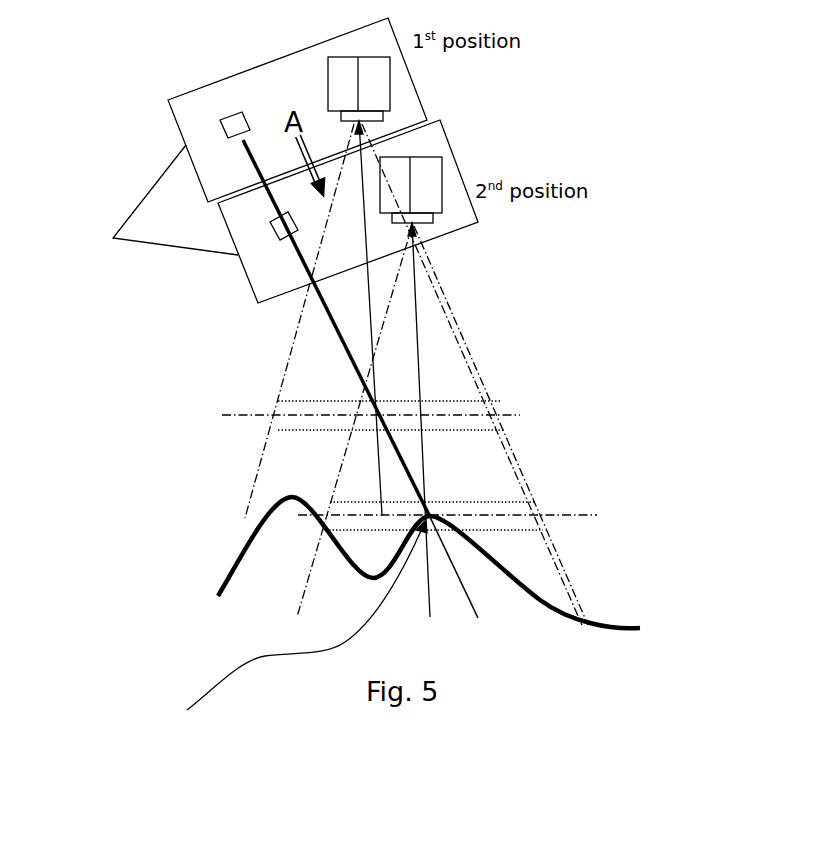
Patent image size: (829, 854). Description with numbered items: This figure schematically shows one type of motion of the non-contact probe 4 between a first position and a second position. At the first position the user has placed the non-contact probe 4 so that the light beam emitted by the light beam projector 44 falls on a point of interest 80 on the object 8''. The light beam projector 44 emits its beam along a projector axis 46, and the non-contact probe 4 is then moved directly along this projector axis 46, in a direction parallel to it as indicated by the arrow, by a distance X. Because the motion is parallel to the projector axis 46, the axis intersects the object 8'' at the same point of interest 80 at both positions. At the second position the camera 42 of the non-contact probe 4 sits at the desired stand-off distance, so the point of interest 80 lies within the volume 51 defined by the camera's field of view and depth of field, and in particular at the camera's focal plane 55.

The non-contact probe 4 is at (280, 160).
The camera 42 is at (390, 83).
The light beam projector 44 is at (272, 218).
The projector axis 46 is at (333, 330).
The volume 51 is at (516, 501).
The focal plane 55 is at (426, 464).
The object 8'' is at (429, 562).
The point of interest 80 is at (285, 626).